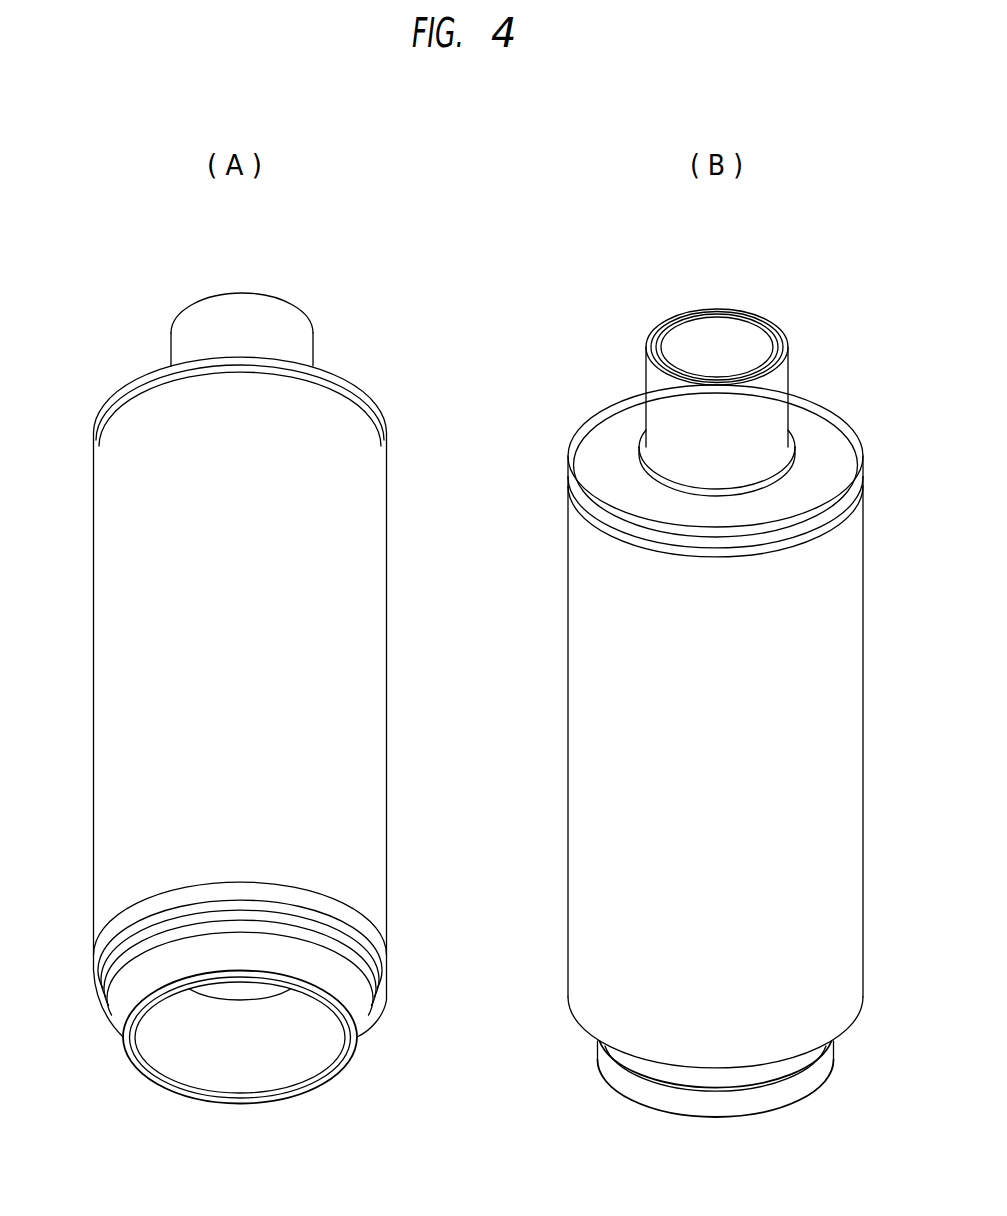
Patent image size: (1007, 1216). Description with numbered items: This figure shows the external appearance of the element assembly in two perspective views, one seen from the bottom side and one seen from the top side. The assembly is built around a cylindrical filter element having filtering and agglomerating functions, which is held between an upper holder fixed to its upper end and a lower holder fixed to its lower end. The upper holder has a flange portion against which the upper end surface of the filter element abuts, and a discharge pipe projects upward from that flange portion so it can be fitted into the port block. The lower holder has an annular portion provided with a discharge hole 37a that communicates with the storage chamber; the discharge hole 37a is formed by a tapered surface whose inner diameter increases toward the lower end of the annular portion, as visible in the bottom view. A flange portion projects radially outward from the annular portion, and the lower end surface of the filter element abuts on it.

The discharge hole 37a is at (290, 1070).